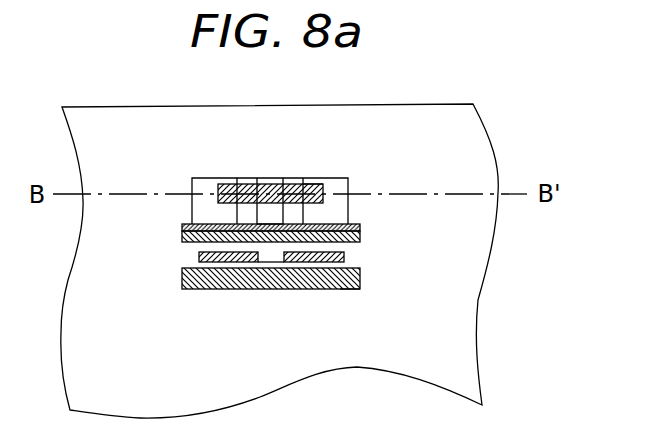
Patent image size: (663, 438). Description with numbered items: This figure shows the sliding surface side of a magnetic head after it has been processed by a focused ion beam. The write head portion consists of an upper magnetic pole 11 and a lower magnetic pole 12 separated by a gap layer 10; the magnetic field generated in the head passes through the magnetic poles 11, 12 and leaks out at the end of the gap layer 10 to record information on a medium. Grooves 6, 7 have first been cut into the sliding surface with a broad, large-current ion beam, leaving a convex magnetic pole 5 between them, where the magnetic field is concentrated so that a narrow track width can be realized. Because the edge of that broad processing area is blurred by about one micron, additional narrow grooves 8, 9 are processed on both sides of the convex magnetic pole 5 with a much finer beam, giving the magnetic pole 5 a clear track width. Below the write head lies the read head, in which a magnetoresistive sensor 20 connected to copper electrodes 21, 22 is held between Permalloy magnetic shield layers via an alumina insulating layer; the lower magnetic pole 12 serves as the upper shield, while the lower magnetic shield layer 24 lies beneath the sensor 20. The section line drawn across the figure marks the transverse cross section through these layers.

The magnetic pole 5 is at (272, 182).
The groove 6 is at (338, 178).
The groove 7 is at (209, 178).
The groove 8 is at (297, 178).
The groove 9 is at (247, 178).
The gap layer 10 is at (273, 217).
The magnetic pole 11 is at (323, 190).
The lower magnetic pole 12 is at (360, 235).
The magnetoresistive sensor 20 is at (273, 262).
The copper electrode 21 is at (199, 258).
The copper electrode 22 is at (344, 259).
The magnetic shield layer 24 is at (355, 289).